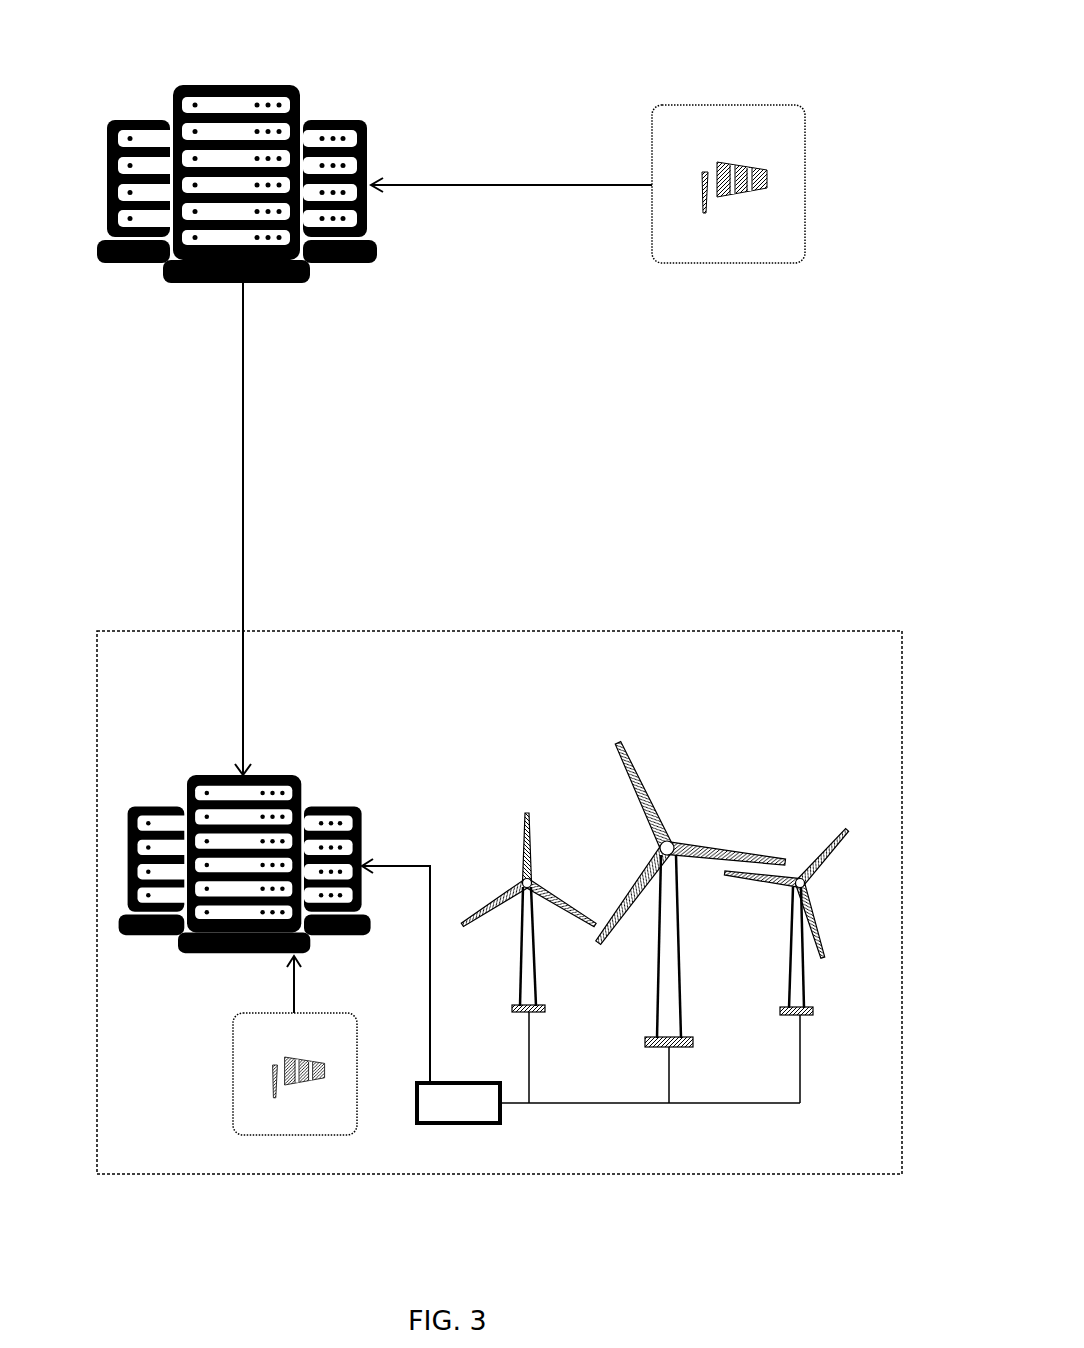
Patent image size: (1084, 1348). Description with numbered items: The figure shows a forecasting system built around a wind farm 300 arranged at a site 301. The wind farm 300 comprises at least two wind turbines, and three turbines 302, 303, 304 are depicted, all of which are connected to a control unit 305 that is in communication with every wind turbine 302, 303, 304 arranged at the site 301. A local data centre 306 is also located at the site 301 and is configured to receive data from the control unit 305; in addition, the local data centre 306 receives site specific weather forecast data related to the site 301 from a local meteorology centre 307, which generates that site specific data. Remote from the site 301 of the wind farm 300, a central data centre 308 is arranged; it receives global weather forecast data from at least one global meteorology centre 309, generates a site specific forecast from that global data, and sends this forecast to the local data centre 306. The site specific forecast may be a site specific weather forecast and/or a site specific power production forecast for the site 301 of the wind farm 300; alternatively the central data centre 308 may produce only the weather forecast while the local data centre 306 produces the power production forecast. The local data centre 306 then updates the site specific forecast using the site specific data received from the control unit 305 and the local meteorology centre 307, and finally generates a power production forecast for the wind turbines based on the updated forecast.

The wind farm 300 is at (671, 852).
The site 301 is at (605, 655).
The wind turbine 302 is at (529, 895).
The wind turbine 303 is at (689, 881).
The wind turbine 304 is at (803, 921).
The control unit 305 is at (462, 1109).
The local data centre 306 is at (335, 818).
The local meteorology centre 307 is at (243, 1047).
The central data centre 308 is at (345, 120).
The global meteorology centre 309 is at (678, 128).